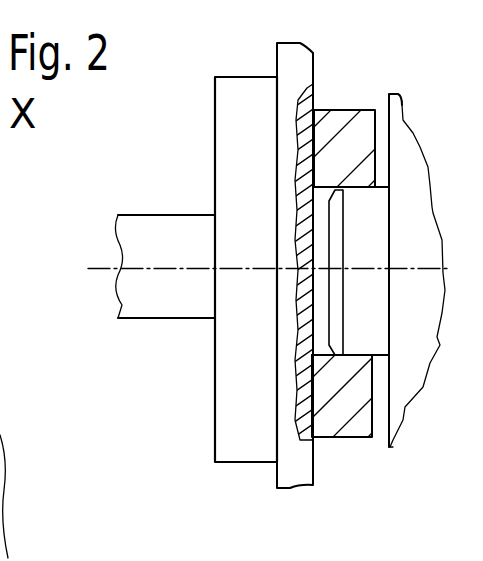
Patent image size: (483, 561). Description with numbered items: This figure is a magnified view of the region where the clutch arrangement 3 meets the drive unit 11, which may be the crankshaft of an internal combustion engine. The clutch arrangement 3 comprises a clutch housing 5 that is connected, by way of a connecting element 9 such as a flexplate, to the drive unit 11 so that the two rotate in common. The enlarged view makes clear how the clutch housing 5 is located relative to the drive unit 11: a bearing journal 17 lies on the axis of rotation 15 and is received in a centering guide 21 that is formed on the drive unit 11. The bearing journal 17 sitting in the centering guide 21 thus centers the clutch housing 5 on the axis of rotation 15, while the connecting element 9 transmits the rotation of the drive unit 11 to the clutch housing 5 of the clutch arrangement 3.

The clutch arrangement 3 is at (407, 188).
The clutch housing 5 is at (408, 243).
The connecting element 9 is at (288, 72).
The drive unit 11 is at (157, 300).
The axis of rotation 15 is at (358, 272).
The bearing journal 17 is at (370, 250).
The centering guide 21 is at (327, 408).